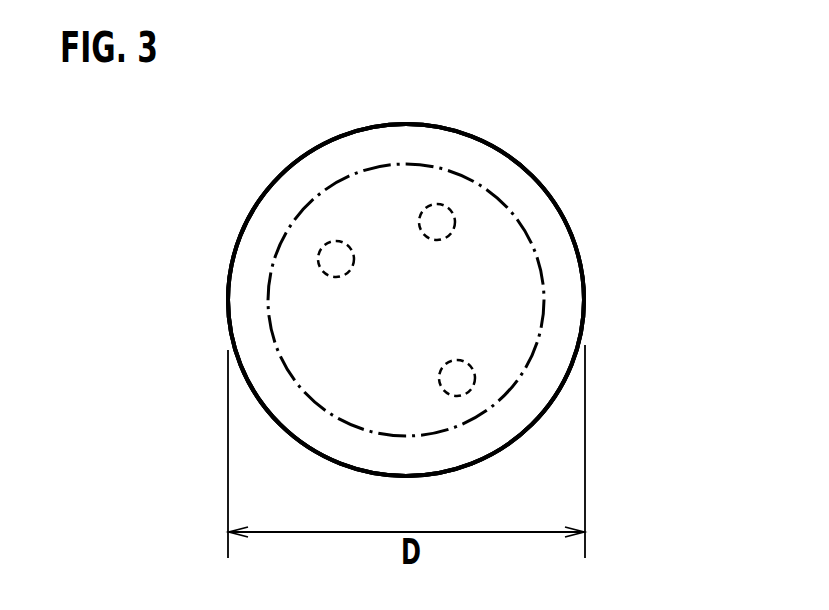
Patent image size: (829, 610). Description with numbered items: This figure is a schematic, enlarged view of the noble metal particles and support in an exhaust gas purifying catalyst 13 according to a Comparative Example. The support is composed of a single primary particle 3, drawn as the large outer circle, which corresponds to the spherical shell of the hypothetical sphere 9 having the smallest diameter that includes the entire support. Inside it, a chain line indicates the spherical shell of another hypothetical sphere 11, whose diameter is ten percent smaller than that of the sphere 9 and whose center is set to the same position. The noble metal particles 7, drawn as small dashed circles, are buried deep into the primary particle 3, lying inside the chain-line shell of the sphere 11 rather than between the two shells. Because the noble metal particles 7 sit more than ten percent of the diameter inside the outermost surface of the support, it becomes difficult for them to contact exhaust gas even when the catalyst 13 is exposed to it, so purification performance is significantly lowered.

The primary particle 3 is at (345, 129).
The noble metal particles 7 is at (328, 255).
The hypothetical sphere 9 is at (550, 195).
The hypothetical sphere 11 is at (538, 271).
The catalyst 13 is at (460, 96).